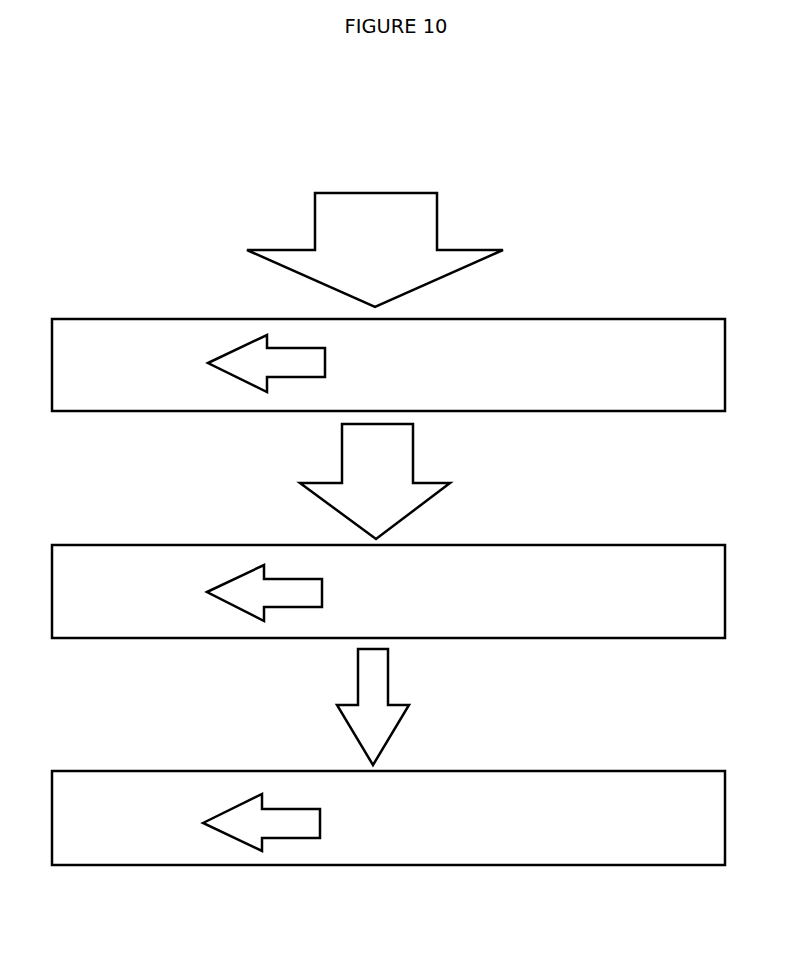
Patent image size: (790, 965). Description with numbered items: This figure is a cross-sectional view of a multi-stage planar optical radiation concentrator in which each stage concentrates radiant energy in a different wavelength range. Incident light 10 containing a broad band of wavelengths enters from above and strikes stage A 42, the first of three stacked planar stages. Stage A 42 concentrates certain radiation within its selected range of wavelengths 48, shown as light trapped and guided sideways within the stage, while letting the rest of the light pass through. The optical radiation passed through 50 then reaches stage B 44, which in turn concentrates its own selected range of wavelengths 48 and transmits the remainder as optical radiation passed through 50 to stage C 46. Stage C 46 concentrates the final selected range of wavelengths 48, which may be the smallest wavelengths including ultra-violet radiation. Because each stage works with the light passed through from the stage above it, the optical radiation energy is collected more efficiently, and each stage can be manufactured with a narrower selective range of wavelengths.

The incident light 10 is at (324, 206).
The stage A 42 is at (569, 297).
The stage B 44 is at (568, 532).
The stage C 46 is at (571, 763).
The selected range of wavelengths 48 is at (246, 371).
The optical radiation passed through 50 is at (356, 504).